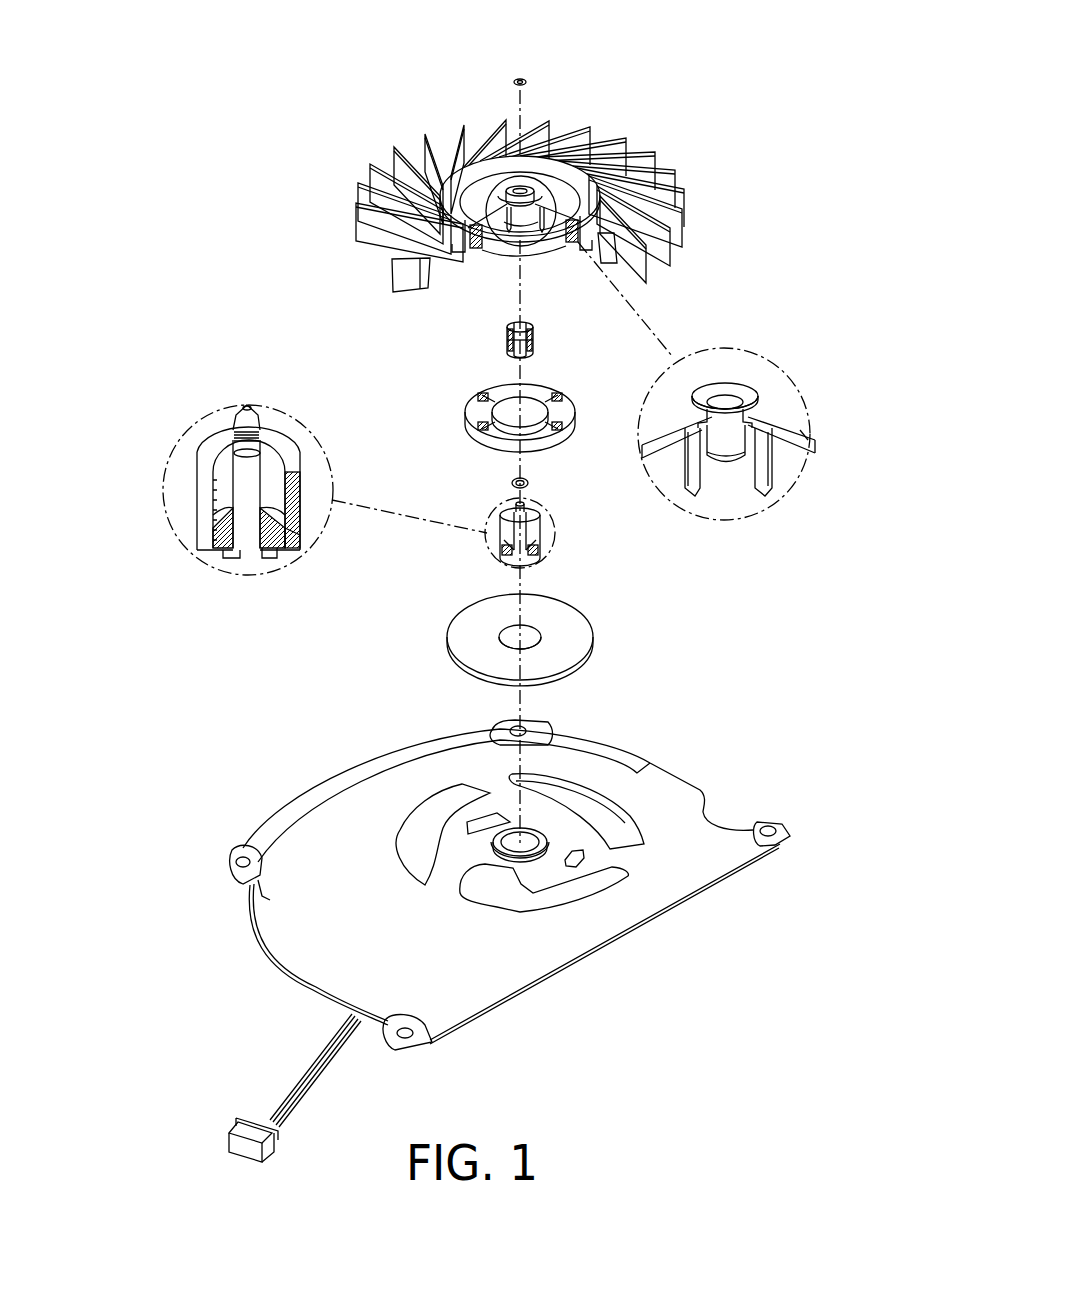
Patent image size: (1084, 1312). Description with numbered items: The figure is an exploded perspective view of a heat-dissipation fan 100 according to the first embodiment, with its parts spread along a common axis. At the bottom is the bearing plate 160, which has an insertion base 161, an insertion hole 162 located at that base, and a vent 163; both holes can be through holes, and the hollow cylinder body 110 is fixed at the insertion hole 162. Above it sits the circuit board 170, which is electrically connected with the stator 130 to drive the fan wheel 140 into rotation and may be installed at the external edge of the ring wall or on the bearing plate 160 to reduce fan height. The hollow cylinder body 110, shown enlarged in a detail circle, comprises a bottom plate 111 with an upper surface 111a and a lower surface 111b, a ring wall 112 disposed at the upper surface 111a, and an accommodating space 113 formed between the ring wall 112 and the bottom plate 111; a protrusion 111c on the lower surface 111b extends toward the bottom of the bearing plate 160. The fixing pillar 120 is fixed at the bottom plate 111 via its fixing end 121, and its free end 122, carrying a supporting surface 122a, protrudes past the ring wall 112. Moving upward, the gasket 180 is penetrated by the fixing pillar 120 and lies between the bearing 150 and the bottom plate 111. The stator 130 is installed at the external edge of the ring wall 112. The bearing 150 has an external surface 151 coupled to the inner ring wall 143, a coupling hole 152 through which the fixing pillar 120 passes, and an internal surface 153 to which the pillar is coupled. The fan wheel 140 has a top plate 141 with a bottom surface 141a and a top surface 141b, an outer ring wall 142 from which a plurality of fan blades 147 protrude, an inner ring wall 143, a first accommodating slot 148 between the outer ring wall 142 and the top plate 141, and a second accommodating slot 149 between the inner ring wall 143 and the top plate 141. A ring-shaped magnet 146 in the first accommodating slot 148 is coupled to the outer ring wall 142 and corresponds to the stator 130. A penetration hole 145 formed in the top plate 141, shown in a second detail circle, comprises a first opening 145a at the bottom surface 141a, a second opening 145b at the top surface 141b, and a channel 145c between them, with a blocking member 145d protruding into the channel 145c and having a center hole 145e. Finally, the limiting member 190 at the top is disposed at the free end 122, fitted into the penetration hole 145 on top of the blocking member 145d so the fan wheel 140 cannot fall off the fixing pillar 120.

The heat-dissipation fan 100 is at (724, 110).
The hollow cylinder body 110 is at (548, 548).
The bottom plate 111 is at (278, 520).
The upper surface 111a is at (292, 540).
The lower surface 111b is at (228, 550).
The protrusion 111c is at (243, 552).
The ring wall 112 is at (215, 472).
The accommodating space 113 is at (220, 480).
The fixing pillar 120 is at (252, 497).
The fixing end 121 is at (232, 545).
The free end 122 is at (249, 505).
The supporting surface 122a is at (250, 406).
The stator 130 is at (465, 415).
The fan wheel 140 is at (625, 316).
The top plate 141 is at (470, 195).
The bottom surface 141a is at (806, 458).
The top surface 141b is at (741, 430).
The outer ring wall 142 is at (470, 252).
The inner ring wall 143 is at (545, 228).
The penetration hole 145 is at (527, 188).
The first opening 145a is at (735, 440).
The second opening 145b is at (723, 385).
The channel 145c is at (745, 400).
The blocking member 145d is at (732, 382).
The center hole 145e is at (700, 385).
The ring-shaped magnet 146 is at (485, 242).
The fan blades 147 is at (400, 152).
The first accommodating slot 148 is at (575, 245).
The second accommodating slot 149 is at (520, 188).
The bearing 150 is at (510, 348).
The external surface 151 is at (506, 347).
The coupling hole 152 is at (515, 354).
The internal surface 153 is at (534, 335).
The bearing plate 160 is at (509, 919).
The insertion base 161 is at (540, 857).
The insertion hole 162 is at (512, 823).
The vent 163 is at (418, 832).
The circuit board 170 is at (445, 638).
The gasket 180 is at (508, 485).
The limiting member 190 is at (528, 80).